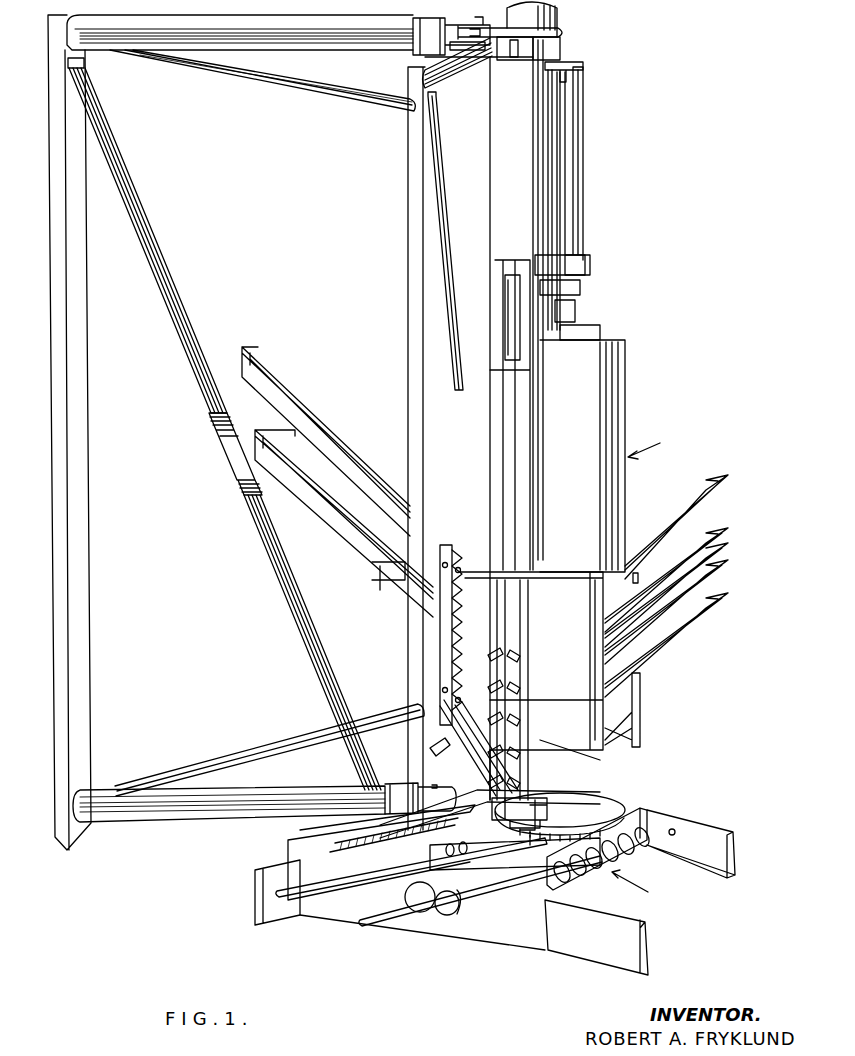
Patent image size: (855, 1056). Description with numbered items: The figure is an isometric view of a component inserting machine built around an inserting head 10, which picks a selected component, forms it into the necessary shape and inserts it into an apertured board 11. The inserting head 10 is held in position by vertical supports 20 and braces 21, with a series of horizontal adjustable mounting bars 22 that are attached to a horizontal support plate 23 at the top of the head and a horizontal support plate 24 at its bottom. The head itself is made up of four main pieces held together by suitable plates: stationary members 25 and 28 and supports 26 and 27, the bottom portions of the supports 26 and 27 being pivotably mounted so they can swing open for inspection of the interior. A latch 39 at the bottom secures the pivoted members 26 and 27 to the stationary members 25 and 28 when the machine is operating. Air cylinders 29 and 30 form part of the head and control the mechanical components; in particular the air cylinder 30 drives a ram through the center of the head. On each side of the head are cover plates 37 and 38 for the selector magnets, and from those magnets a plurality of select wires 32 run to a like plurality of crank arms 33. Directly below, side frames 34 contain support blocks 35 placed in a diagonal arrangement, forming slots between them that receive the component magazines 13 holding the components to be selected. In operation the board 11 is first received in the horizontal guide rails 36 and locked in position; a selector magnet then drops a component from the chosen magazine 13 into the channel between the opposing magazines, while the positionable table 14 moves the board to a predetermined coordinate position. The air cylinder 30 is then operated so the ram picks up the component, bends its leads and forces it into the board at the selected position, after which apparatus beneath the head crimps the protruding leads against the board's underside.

The inserting head 10 is at (656, 442).
The board 11 is at (505, 850).
The component magazines 13 is at (680, 640).
The positionable table 14 is at (640, 891).
The vertical supports 20 is at (408, 214).
The braces 21 is at (430, 132).
The horizontal adjustable mounting bars 22 is at (216, 823).
The horizontal support plate 23 is at (566, 32).
The horizontal support plate 24 is at (596, 800).
The stationary member 25 is at (492, 294).
The pivoted support 26 is at (527, 300).
The pivoted support 27 is at (584, 174).
The stationary member 28 is at (500, 790).
The air cylinder 29 is at (576, 322).
The air cylinder 30 is at (560, 129).
The select wires 32 is at (520, 676).
The crank arms 33 is at (522, 750).
The side frames 34 is at (585, 741).
The support blocks 35 is at (640, 726).
The horizontal guide rails 36 is at (466, 892).
The cover plate 37 is at (620, 410).
The cover plate 38 is at (460, 370).
The latch 39 is at (535, 848).